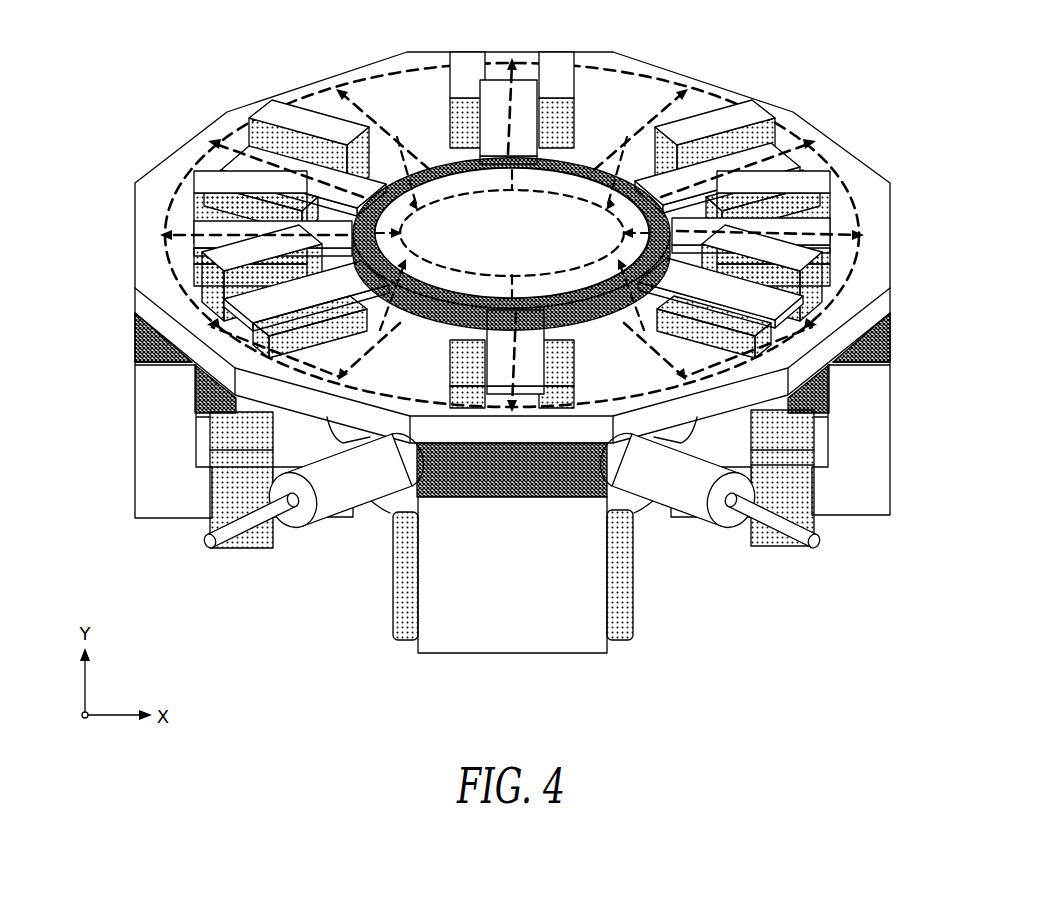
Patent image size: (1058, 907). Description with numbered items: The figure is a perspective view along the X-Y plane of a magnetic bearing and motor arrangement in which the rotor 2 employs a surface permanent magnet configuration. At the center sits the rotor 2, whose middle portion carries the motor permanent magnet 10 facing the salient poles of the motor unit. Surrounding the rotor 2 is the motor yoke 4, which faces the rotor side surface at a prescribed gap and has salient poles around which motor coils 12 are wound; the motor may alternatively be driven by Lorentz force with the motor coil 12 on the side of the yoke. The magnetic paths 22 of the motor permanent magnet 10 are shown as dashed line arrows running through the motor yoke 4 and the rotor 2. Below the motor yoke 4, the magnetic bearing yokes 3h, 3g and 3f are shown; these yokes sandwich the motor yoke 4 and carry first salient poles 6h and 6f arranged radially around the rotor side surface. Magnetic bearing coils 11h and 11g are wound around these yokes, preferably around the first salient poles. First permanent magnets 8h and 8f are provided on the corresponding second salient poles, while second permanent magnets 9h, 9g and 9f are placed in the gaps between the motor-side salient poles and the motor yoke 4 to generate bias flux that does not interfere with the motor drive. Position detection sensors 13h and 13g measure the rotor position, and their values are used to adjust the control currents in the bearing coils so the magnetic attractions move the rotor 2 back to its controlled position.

The rotor 2 is at (506, 237).
The motor yoke 4 is at (890, 222).
The motor permanent magnet 10 is at (512, 205).
The motor coil 12 is at (556, 88).
The magnetic path 22 is at (788, 127).
The second permanent magnet 9h is at (135, 350).
The second permanent magnet 9f is at (890, 337).
The second permanent magnet 9g is at (447, 497).
The first permanent magnet 8h is at (195, 395).
The first permanent magnet 8f is at (830, 403).
The magnetic bearing coil 11h is at (210, 482).
The magnetic bearing coil 11g is at (620, 640).
The magnetic bearing yoke 3h is at (157, 518).
The magnetic bearing yoke 3g is at (517, 653).
The magnetic bearing yoke 3f is at (872, 518).
The position detection sensor 13h is at (330, 500).
The position detection sensor 13g is at (697, 500).
The first salient pole 6h is at (360, 520).
The first salient pole 6f is at (677, 518).